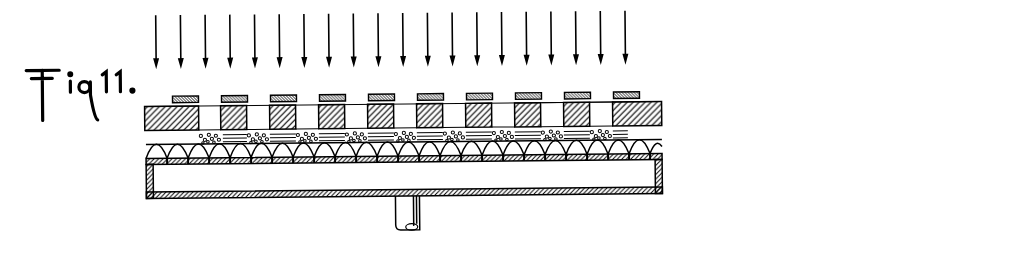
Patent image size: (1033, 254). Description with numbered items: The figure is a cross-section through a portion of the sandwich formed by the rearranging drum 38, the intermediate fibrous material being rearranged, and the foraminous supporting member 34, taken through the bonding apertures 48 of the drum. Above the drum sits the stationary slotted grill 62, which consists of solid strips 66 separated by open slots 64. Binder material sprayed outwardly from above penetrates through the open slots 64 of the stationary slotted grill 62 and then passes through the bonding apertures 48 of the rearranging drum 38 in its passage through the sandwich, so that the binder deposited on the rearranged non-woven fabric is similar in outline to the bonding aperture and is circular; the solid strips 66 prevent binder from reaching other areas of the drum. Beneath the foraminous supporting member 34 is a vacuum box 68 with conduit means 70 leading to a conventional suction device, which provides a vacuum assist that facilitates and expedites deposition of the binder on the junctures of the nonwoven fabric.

The foraminous supporting member 34 is at (662, 153).
The rearranging drum 38 is at (662, 120).
The bonding apertures 48 is at (303, 113).
The stationary slotted grill 62 is at (635, 94).
The open slots 64 is at (600, 97).
The solid strips 66 is at (477, 95).
The vacuum box 68 is at (662, 188).
The conduit means 70 is at (403, 207).